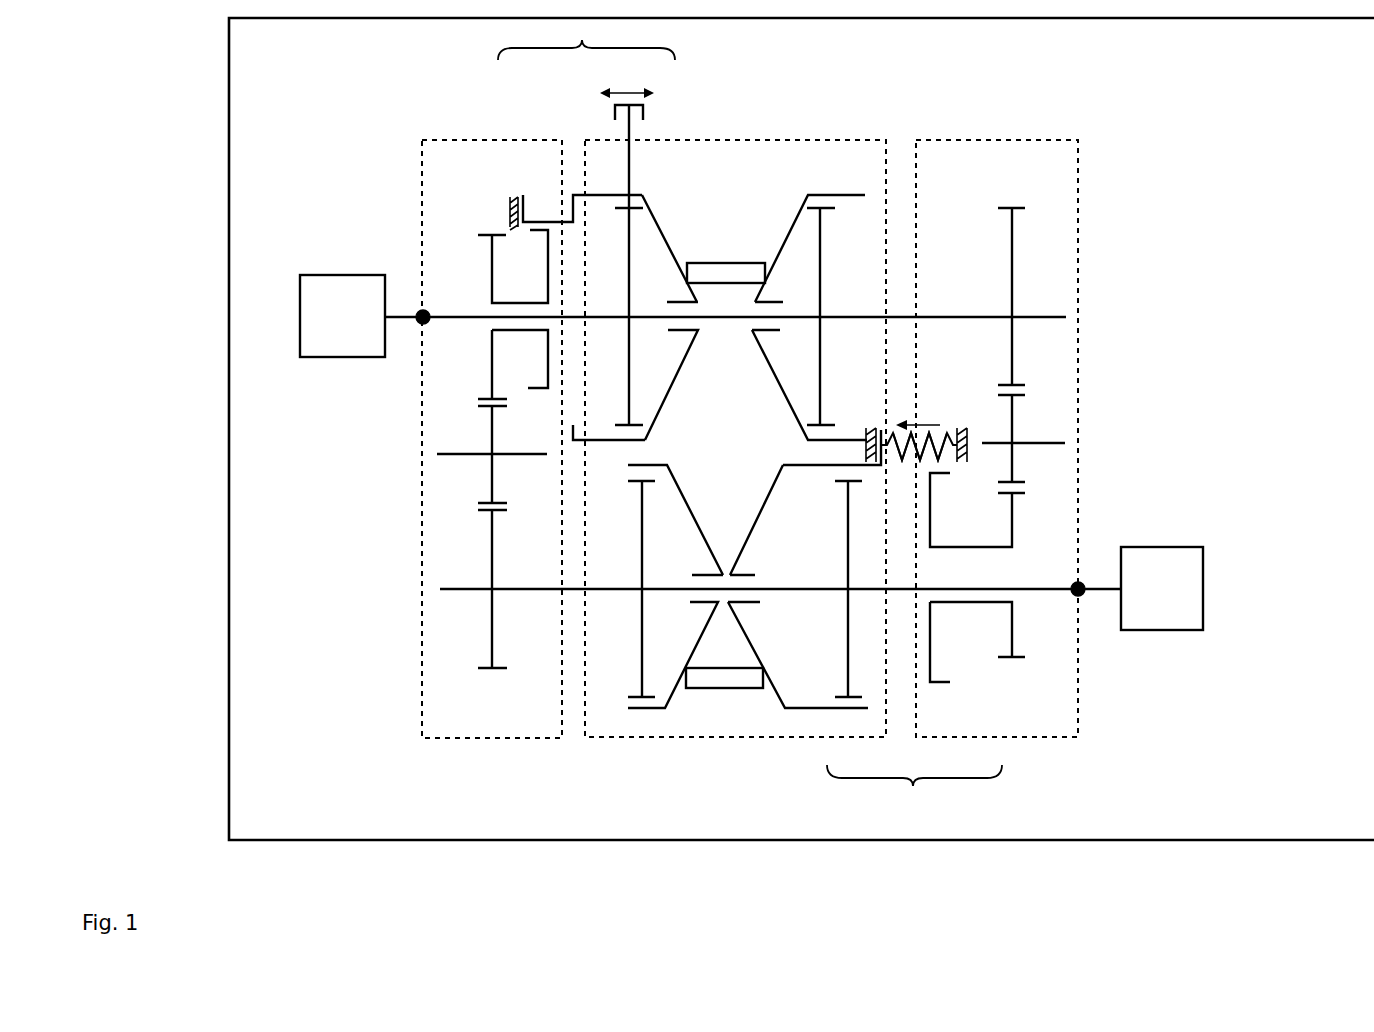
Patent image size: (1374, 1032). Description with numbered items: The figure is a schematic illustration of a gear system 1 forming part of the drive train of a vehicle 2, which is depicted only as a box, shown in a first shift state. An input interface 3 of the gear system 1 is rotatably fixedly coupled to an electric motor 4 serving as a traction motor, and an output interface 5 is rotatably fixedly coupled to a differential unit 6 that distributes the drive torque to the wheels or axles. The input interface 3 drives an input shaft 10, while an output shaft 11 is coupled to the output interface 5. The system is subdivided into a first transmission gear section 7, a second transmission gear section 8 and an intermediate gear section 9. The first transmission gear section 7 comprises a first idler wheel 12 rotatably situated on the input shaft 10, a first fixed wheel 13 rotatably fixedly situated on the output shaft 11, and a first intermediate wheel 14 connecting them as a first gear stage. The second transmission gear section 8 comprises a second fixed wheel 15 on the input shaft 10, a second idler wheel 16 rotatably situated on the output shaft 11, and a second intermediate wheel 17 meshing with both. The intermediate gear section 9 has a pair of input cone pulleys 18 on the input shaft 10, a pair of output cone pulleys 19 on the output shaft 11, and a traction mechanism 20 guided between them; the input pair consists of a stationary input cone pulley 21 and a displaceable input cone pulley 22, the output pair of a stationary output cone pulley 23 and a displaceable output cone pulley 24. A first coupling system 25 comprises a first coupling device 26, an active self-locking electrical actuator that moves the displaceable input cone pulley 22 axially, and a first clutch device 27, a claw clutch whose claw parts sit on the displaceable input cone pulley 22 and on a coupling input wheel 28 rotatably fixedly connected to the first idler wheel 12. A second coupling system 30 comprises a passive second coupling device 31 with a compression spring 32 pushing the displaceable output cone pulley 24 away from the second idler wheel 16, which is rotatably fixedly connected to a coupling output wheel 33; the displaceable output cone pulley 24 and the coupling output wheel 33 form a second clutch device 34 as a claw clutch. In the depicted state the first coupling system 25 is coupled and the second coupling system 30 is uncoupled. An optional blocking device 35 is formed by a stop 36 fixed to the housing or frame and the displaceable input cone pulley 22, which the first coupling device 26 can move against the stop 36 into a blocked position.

The gear system 1 is at (1206, 174).
The vehicle 2 is at (801, 429).
The input interface 3 is at (419, 313).
The electric motor 4 is at (342, 316).
The output interface 5 is at (1083, 585).
The differential unit 6 is at (1162, 588).
The first transmission gear section 7 is at (488, 127).
The second transmission gear section 8 is at (992, 127).
The intermediate gear section 9 is at (727, 127).
The input shaft 10 is at (462, 317).
The output shaft 11 is at (1036, 589).
The first idler wheel 12 is at (491, 365).
The first fixed wheel 13 is at (491, 563).
The first intermediate wheel 14 is at (491, 447).
The second fixed wheel 15 is at (1013, 303).
The second idler wheel 16 is at (1013, 535).
The second intermediate wheel 17 is at (1013, 433).
The pair of input cone pulleys 18 is at (726, 245).
The pair of output cone pulleys 19 is at (756, 426).
The traction mechanism 20 is at (726, 689).
The stationary input cone pulley 21 is at (833, 194).
The displaceable input cone pulley 22 is at (641, 194).
The stationary output cone pulley 23 is at (637, 465).
The displaceable output cone pulley 24 is at (790, 465).
The first coupling system 25 is at (586, 40).
The first coupling device 26 is at (645, 112).
The first clutch device 27 is at (542, 188).
The coupling input wheel 28 is at (538, 233).
The second coupling system 30 is at (914, 790).
The second coupling device 31 is at (949, 432).
The compression spring 32 is at (920, 446).
The coupling output wheel 33 is at (932, 513).
The second clutch device 34 is at (887, 491).
The blocking device 35 is at (492, 215).
The stop 36 is at (513, 208).